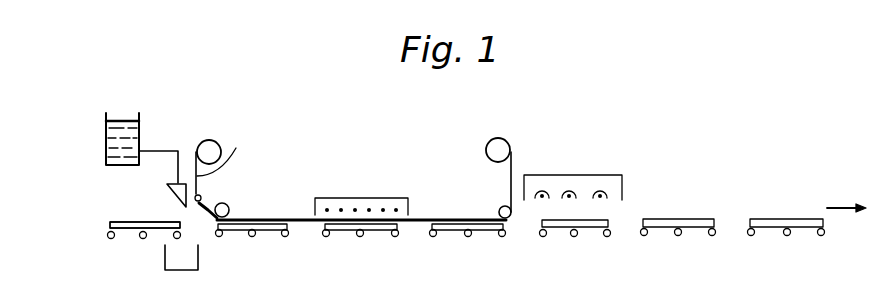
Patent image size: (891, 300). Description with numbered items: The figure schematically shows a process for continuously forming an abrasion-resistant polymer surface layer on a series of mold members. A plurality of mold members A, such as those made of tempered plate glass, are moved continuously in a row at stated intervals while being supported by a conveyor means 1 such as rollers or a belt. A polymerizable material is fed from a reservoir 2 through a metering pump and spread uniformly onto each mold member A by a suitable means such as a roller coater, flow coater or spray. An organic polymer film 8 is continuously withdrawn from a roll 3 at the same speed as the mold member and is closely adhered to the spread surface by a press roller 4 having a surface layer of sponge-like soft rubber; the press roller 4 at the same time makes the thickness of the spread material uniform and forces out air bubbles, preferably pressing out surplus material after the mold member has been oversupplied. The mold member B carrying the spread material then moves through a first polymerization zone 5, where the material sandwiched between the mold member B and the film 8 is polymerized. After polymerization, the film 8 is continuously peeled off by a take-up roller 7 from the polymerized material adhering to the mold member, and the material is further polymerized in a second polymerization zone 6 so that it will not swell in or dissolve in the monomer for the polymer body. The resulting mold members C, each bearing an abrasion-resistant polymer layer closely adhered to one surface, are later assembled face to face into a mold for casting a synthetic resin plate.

The conveyor means 1 is at (108, 235).
The reservoir 2 is at (106, 144).
The roll 3 is at (196, 143).
The press roller 4 is at (224, 204).
The first polymerization zone 5 is at (331, 203).
The second polymerization zone 6 is at (555, 183).
The take-up roller 7 is at (506, 141).
The organic polymer film 8 is at (222, 155).
The mold member A is at (127, 228).
The mold member having polymerizable material spread thereon B is at (373, 228).
The mold member having abrasion-resistant polymer layer C is at (801, 227).